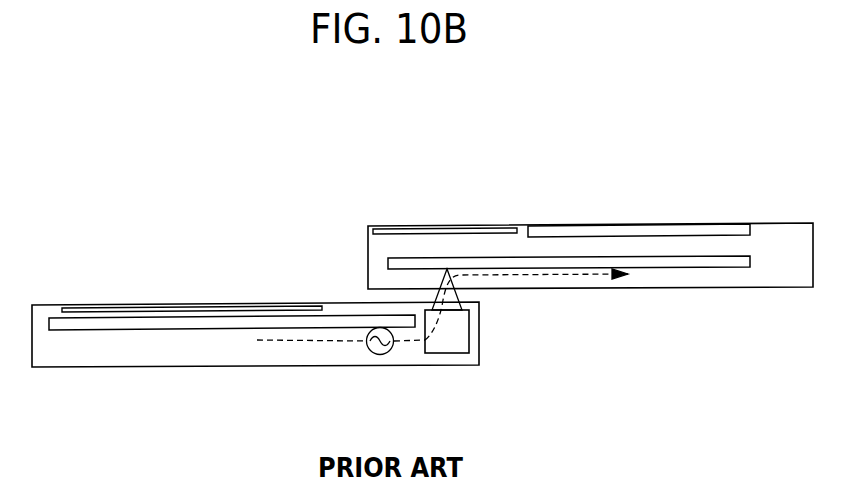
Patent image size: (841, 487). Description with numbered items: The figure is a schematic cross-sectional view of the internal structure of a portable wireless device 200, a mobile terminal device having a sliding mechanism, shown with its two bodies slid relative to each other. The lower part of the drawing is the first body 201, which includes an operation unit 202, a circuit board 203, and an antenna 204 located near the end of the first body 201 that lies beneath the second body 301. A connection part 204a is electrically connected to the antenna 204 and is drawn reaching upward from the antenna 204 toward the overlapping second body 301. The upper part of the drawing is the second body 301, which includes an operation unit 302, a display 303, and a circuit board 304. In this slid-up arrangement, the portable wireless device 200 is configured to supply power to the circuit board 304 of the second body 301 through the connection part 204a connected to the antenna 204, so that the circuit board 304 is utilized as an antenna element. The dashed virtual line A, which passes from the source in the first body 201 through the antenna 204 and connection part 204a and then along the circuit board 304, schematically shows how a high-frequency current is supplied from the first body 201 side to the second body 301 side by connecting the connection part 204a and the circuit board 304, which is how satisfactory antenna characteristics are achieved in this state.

The portable wireless device 200 is at (718, 182).
The first body 201 is at (177, 367).
The operation unit 202 is at (172, 307).
The circuit board 203 is at (243, 323).
The antenna 204 is at (443, 355).
The connection part 204a is at (453, 294).
The virtual line A is at (313, 360).
The second body 301 is at (792, 228).
The operation unit 302 is at (417, 228).
The display 303 is at (587, 228).
The circuit board 304 is at (658, 262).